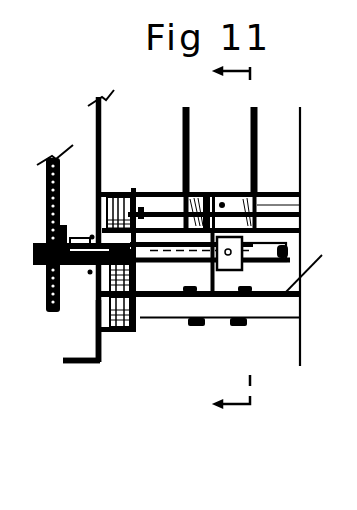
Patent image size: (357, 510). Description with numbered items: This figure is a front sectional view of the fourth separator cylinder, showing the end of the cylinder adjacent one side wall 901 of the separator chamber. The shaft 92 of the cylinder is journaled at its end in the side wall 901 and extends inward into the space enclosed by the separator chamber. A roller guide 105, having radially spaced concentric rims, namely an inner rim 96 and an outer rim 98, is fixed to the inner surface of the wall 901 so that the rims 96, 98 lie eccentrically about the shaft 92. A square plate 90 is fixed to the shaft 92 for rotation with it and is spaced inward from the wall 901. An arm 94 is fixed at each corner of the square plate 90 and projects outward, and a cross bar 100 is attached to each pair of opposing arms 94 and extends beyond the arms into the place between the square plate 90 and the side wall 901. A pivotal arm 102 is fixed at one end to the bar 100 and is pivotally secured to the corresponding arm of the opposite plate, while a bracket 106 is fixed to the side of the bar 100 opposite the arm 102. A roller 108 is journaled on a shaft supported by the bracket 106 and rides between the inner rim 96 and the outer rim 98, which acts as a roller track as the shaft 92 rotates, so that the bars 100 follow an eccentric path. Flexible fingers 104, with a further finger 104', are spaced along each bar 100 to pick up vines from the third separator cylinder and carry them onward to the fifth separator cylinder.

The side wall 901 is at (100, 118).
The roller guide 105 is at (97, 317).
The roller 108 is at (120, 196).
The bracket 106 is at (134, 197).
The flexible fingers 104 is at (213, 169).
The second support plate 104' is at (221, 160).
The pivotal arm 102 is at (239, 187).
The cross bar 100 is at (285, 197).
The shaft 92 is at (272, 247).
The inner rim 96 is at (128, 283).
The outer rim 98 is at (108, 333).
The arm 94 is at (208, 286).
The square plate 90 is at (218, 279).